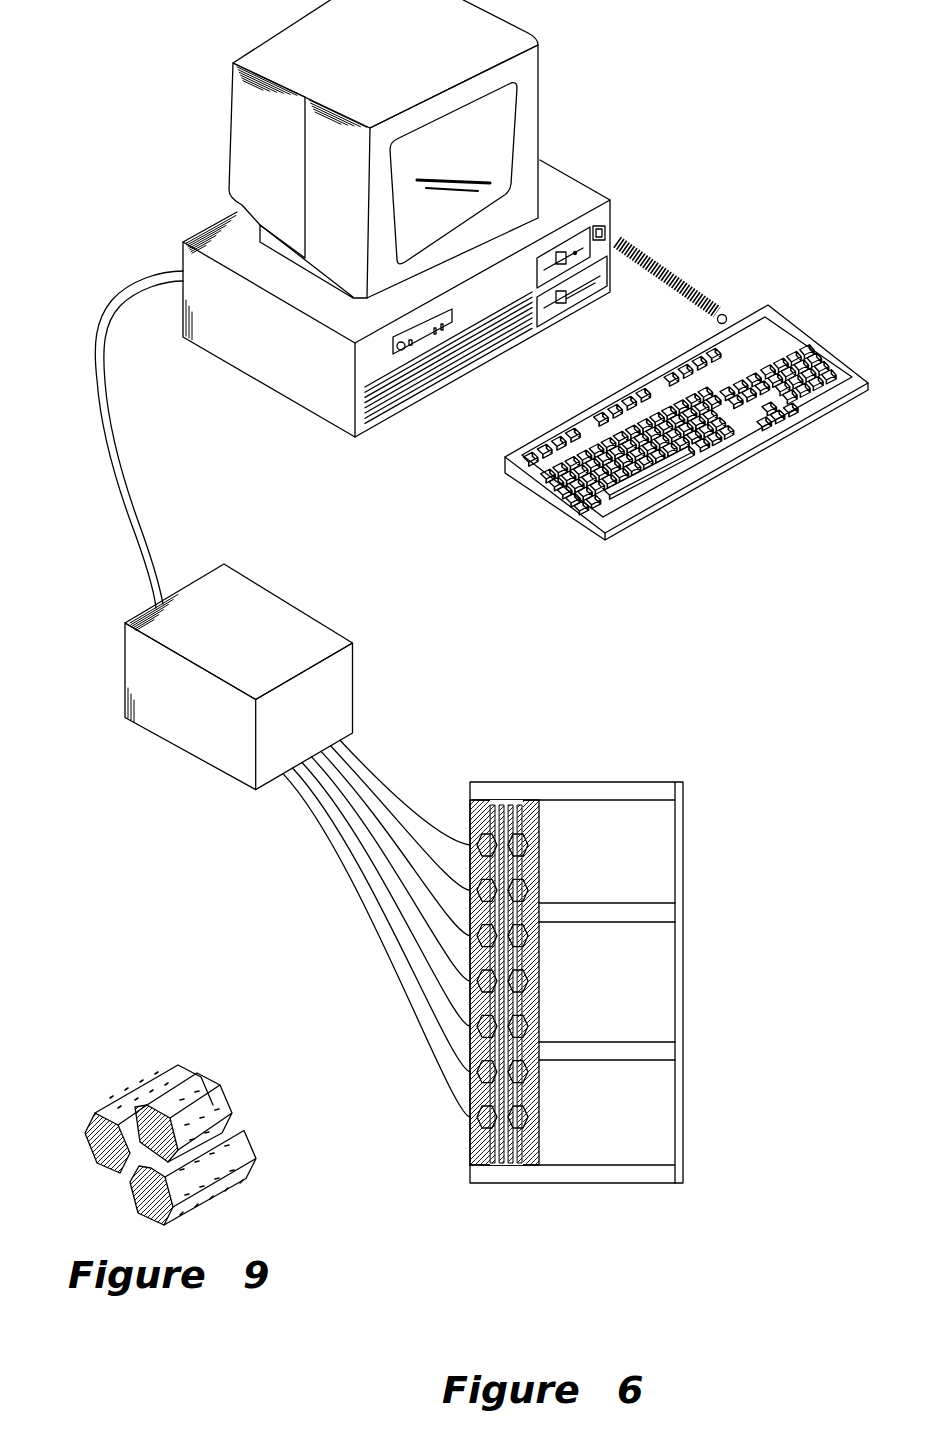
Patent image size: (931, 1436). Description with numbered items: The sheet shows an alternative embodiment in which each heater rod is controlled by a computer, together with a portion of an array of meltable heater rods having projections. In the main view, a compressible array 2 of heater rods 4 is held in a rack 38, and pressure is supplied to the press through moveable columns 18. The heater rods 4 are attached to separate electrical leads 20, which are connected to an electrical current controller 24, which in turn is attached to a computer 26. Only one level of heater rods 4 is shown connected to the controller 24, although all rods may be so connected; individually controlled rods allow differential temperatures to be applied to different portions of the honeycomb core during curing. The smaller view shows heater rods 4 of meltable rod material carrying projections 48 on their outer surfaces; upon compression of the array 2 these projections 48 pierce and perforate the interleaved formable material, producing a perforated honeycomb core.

In FIG. 6, the computer 26 is at (252, 140).
In FIG. 6, the electrical current controller 24 is at (251, 641).
In FIG. 6, the electrical leads 20 is at (366, 774).
In FIG. 6, the rack 38 is at (714, 863).
In FIG. 6, the moveable columns 18 is at (620, 917).
In FIG. 6, the compressible array 2 is at (480, 1172).
In FIG. 6, the heater rods 4 is at (478, 1131).
In FIG. 9, the heater rods 4 is at (104, 1110).
In FIG. 9, the projections 48 is at (223, 1107).